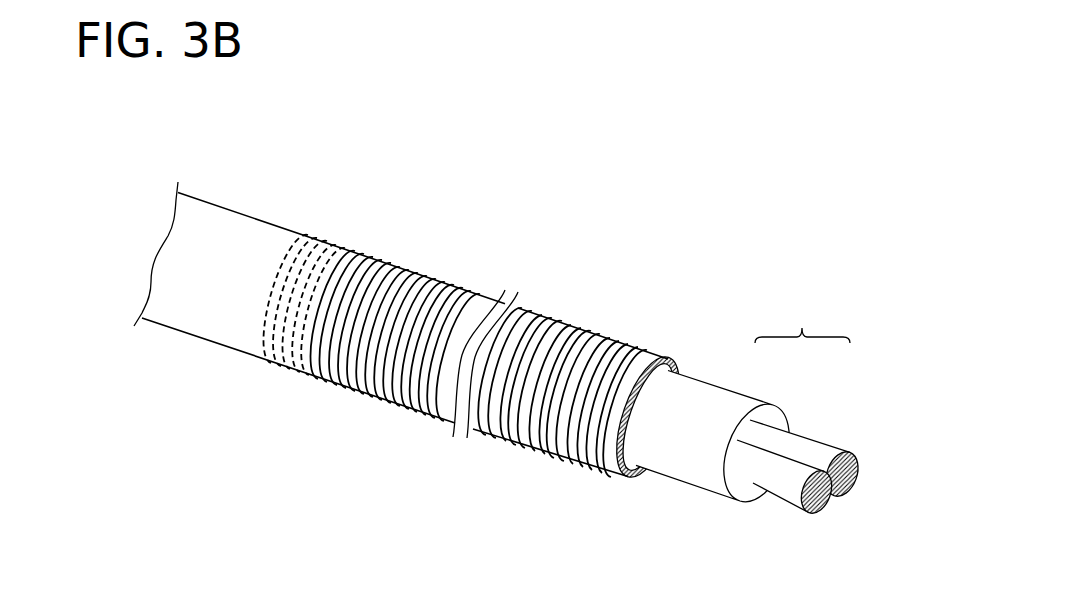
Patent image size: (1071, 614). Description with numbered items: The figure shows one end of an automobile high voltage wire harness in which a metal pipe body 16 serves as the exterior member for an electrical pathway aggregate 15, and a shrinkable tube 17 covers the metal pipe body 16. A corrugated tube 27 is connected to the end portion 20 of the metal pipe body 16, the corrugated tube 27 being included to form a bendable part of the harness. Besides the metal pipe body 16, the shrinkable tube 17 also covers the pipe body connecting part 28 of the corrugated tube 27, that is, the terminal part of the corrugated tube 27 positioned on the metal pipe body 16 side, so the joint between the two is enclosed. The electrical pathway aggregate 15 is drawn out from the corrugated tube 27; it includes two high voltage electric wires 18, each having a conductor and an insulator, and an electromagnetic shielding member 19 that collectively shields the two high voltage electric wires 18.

The electrical pathway aggregate 15 is at (802, 321).
The metal pipe body 16 is at (247, 228).
The shrinkable tube 17 is at (203, 213).
The high voltage electric wire 18 is at (806, 443).
The electromagnetic shielding member 19 is at (733, 404).
The end portion of the metal pipe body 20 is at (241, 333).
The corrugated tube 27 is at (386, 381).
The pipe body connecting part 28 is at (330, 253).